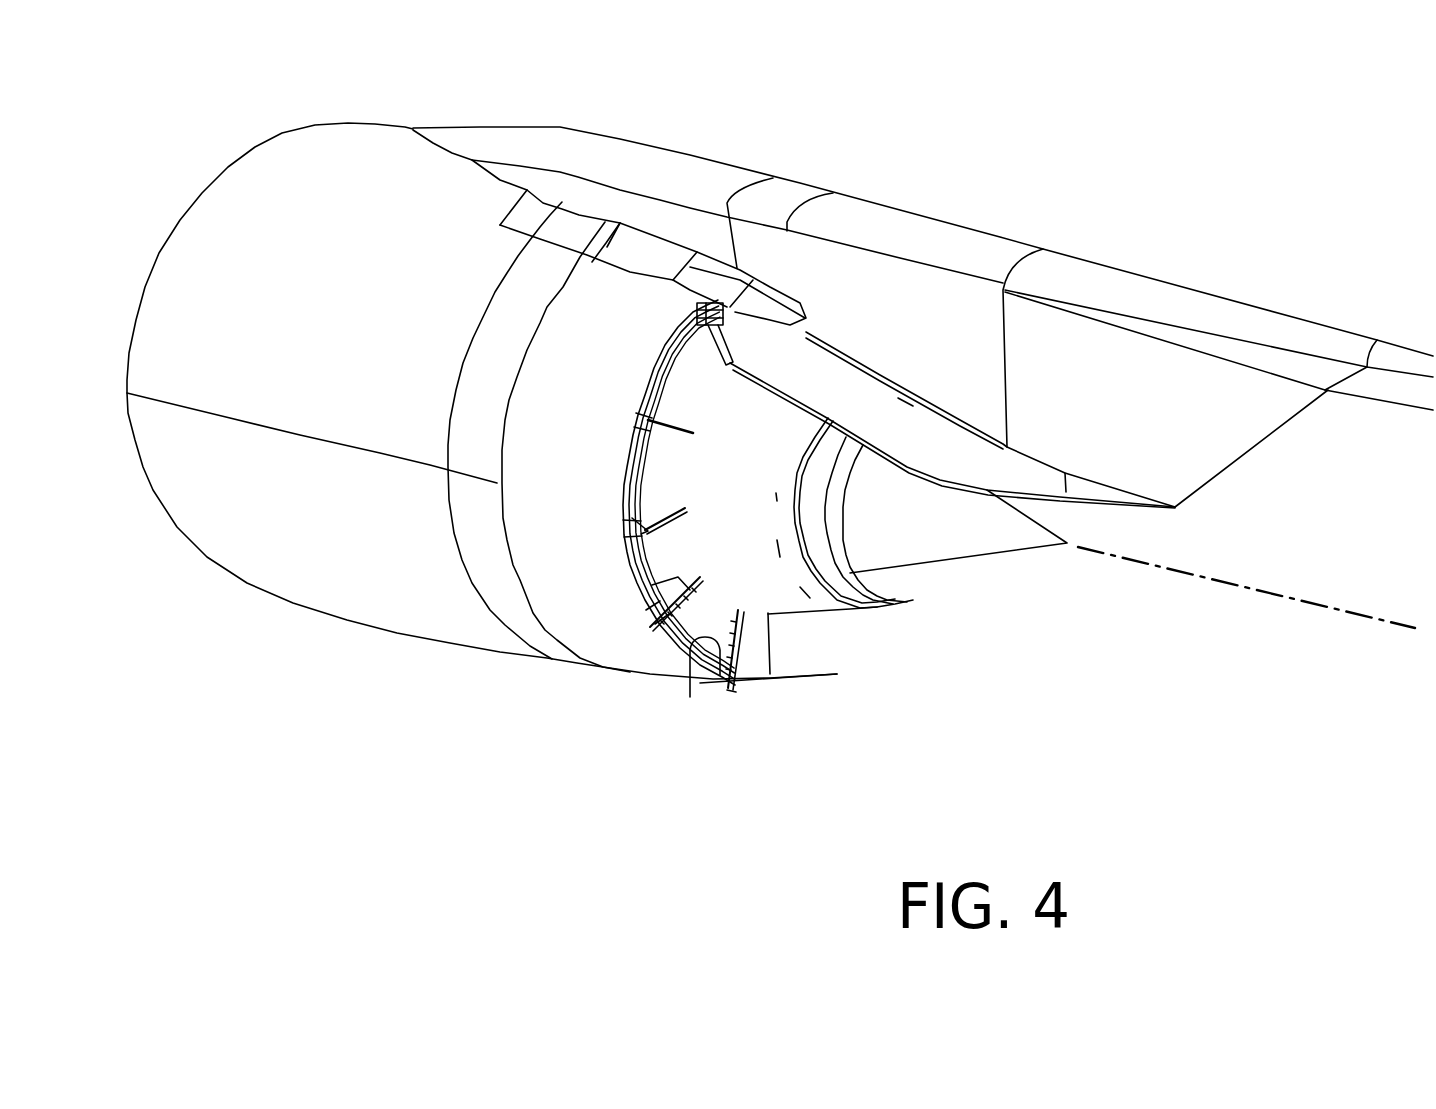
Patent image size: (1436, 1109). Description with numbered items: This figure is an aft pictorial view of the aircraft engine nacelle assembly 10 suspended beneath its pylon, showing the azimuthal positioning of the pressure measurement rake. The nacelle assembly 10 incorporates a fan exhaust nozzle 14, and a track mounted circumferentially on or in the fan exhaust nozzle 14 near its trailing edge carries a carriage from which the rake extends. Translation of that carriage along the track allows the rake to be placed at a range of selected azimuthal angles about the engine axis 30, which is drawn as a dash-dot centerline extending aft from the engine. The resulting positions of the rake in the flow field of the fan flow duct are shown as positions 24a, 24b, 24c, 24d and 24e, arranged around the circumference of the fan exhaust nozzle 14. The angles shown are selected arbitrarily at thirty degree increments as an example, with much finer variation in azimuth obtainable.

The aircraft engine nacelle assembly 10 is at (780, 488).
The fan exhaust nozzle 14 is at (607, 603).
The pressure measurement rake position 24a is at (727, 347).
The pressure measurement rake position 24b is at (680, 428).
The pressure measurement rake position 24c is at (660, 520).
The pressure measurement rake position 24d is at (682, 608).
The pressure measurement rake position 24e is at (722, 682).
The engine axis 30 is at (1217, 580).